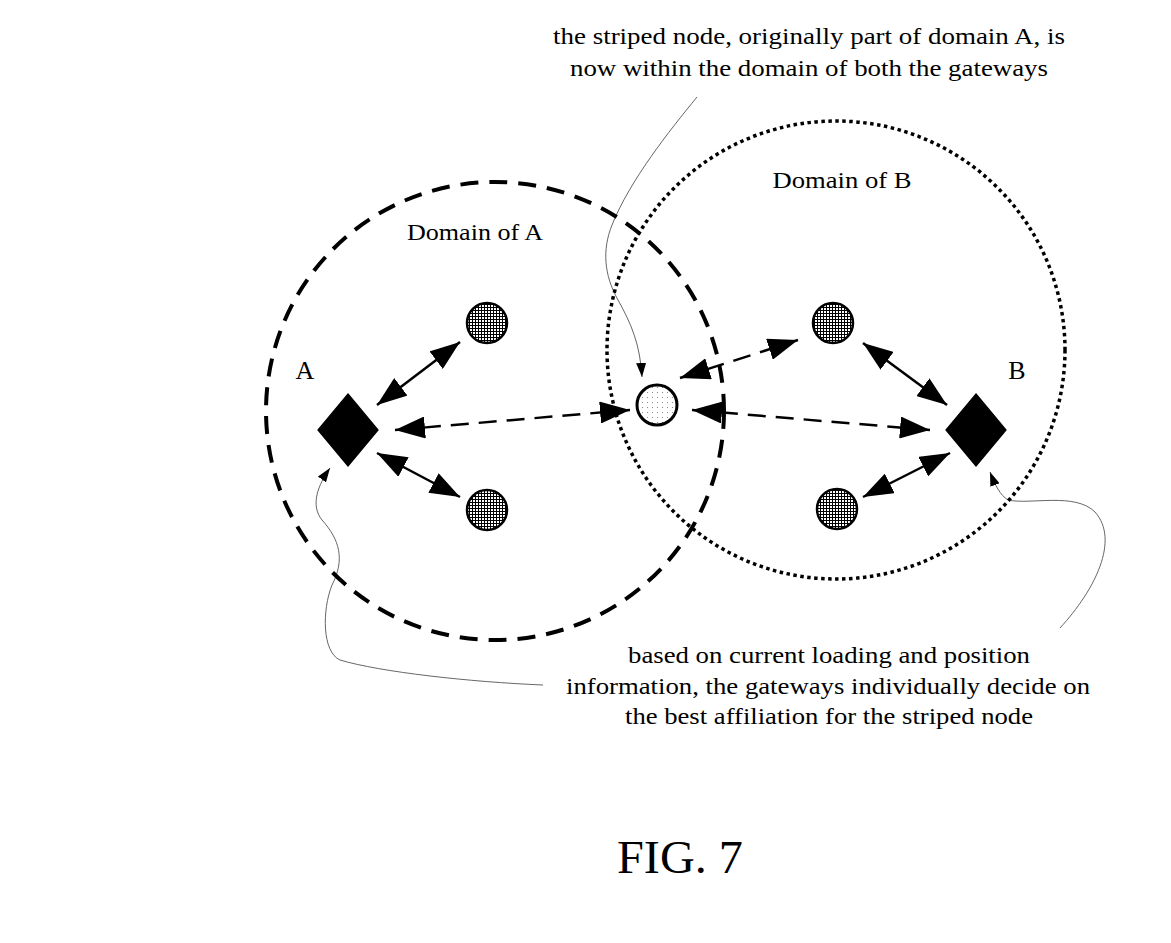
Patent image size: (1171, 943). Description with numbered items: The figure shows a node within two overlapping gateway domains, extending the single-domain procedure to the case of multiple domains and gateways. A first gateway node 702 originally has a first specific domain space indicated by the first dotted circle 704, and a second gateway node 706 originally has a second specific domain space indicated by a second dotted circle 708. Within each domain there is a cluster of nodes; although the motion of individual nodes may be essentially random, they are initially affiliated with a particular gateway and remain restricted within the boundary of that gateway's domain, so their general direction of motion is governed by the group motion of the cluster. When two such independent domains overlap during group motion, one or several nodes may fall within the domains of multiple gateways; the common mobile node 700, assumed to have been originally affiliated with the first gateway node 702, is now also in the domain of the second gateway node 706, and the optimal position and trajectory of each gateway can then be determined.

The mobile node 700 is at (643, 423).
The first gateway node 702 is at (310, 430).
The first dotted circle 704 is at (300, 275).
The second gateway node 706 is at (1010, 425).
The second dotted circle 708 is at (1058, 275).